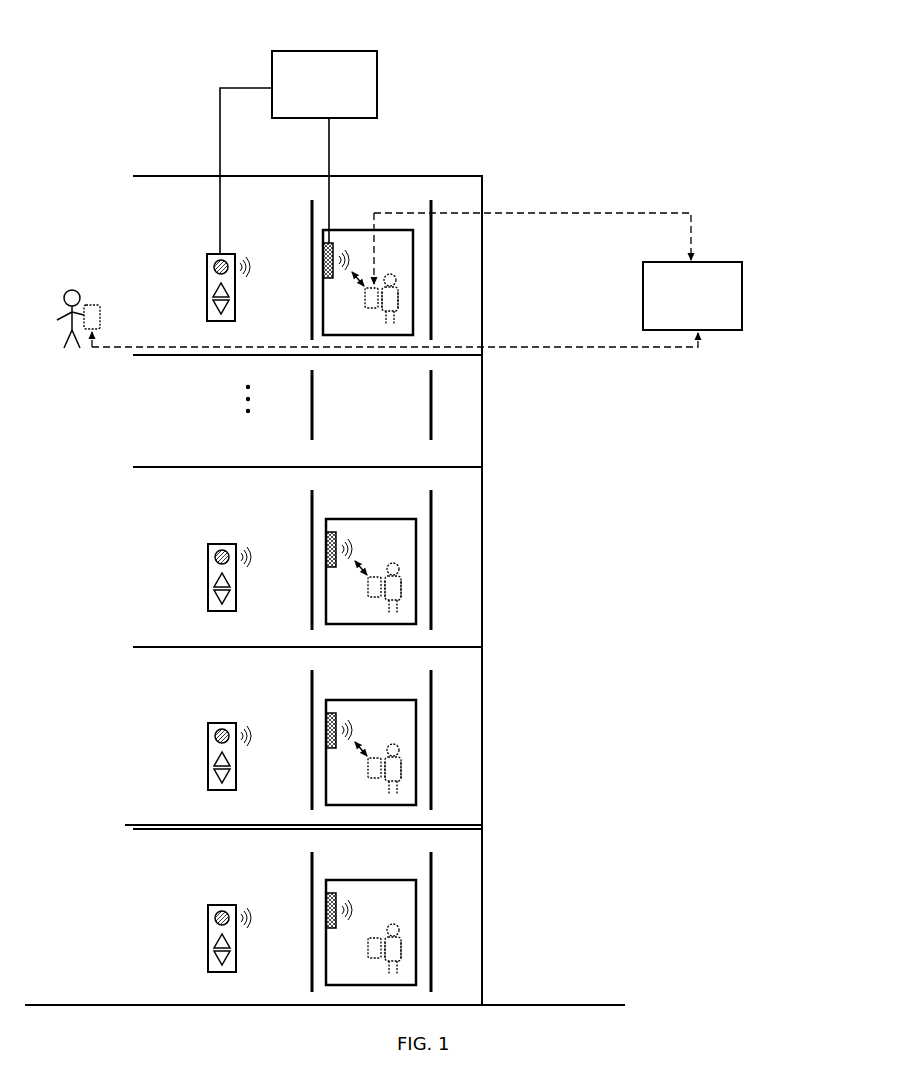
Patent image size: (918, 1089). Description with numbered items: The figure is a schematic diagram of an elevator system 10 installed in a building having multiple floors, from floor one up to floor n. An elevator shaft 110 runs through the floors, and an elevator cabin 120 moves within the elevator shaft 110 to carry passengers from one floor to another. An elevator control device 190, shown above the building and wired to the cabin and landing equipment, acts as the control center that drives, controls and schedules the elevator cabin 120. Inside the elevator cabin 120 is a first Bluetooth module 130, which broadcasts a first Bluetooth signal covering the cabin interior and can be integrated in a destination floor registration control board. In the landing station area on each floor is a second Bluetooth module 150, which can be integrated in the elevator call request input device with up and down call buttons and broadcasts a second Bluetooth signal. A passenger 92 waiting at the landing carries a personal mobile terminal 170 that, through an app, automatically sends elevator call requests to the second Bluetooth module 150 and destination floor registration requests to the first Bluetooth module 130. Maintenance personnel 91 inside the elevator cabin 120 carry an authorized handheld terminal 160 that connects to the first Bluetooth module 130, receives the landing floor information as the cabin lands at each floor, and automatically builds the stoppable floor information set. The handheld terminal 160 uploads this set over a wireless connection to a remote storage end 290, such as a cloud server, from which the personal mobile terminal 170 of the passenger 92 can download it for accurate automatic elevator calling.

The elevator system 10 is at (130, 74).
The elevator control device 190 is at (379, 83).
The elevator shaft 110 is at (401, 195).
The elevator cabin 120 is at (340, 228).
The first Bluetooth module 130 is at (334, 250).
The maintenance personnel 91 is at (392, 272).
The handheld terminal 160 is at (364, 306).
The second Bluetooth module 150 is at (207, 268).
The passenger 92 is at (68, 290).
The personal mobile terminal 170 is at (101, 310).
The storage end 290 is at (744, 296).